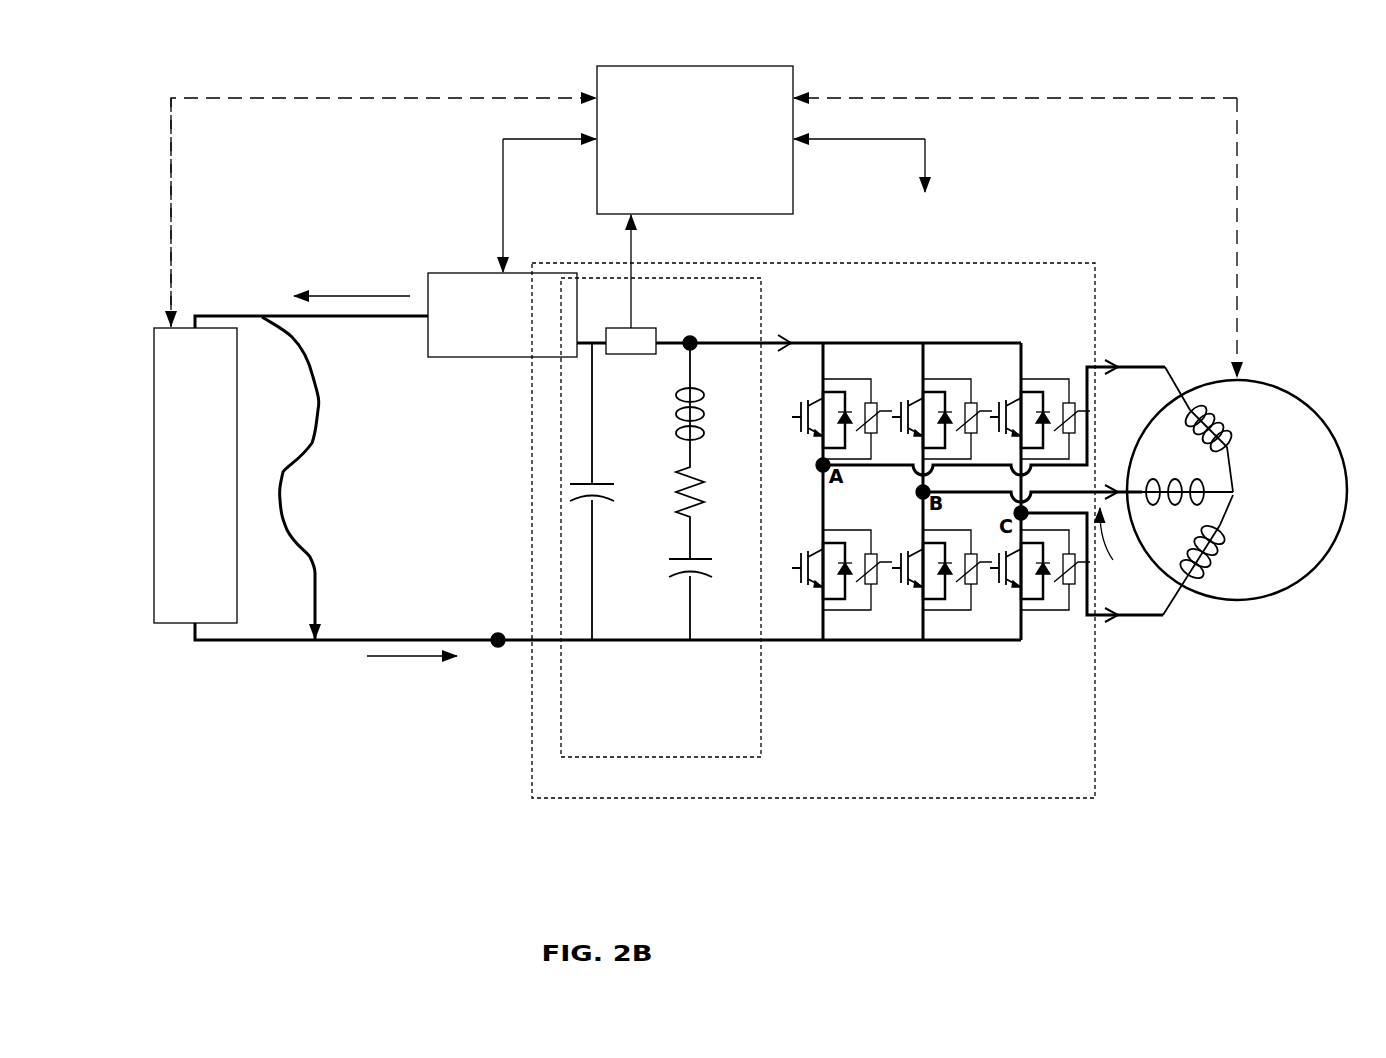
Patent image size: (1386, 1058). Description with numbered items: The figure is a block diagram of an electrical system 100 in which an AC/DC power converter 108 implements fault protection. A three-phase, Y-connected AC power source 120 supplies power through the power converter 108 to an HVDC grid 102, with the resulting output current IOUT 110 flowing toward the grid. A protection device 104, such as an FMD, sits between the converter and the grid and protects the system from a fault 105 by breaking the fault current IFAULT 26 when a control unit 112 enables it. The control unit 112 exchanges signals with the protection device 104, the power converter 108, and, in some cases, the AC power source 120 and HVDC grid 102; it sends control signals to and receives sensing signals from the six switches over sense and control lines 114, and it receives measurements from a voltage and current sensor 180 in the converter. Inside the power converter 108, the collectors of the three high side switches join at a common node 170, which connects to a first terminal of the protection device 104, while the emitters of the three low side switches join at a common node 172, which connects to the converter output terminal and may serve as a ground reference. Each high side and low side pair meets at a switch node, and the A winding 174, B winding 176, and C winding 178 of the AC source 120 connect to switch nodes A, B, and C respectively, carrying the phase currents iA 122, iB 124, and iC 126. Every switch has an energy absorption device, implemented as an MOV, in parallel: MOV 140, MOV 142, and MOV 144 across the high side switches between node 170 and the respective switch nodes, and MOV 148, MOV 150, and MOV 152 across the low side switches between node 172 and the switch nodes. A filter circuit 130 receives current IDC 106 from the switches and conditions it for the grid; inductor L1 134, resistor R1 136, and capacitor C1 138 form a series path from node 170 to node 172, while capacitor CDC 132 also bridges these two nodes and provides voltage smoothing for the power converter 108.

The electrical system 100 is at (282, 69).
The HVDC grid 102 is at (181, 514).
The protection device 104 is at (488, 352).
The fault 105 is at (262, 441).
The current IDC 106 is at (780, 317).
The power converter 108 is at (898, 781).
The output current IOUT 110 is at (343, 284).
The control unit 112 is at (681, 176).
The sense and control lines 114 is at (910, 254).
The AC power source 120 is at (1232, 687).
The current iA 122 is at (1100, 351).
The current iB 124 is at (1100, 604).
The current iC 126 is at (1105, 684).
The filter circuit 130 is at (645, 742).
The capacitor CDC 132 is at (623, 512).
The inductor L1 134 is at (718, 426).
The resistor R1 136 is at (718, 512).
The capacitor C1 138 is at (718, 611).
The MOV 140 is at (871, 373).
The MOV 142 is at (969, 373).
The MOV 144 is at (1070, 373).
The MOV 148 is at (867, 613).
The MOV 150 is at (968, 613).
The MOV 152 is at (1047, 613).
The common node 170 is at (691, 329).
The common node 172 is at (498, 628).
The A winding 174 is at (1224, 426).
The B winding 176 is at (1185, 476).
The C winding 178 is at (1235, 538).
The voltage and current sensor 180 is at (631, 284).
The fault current IFAULT 26 is at (388, 714).